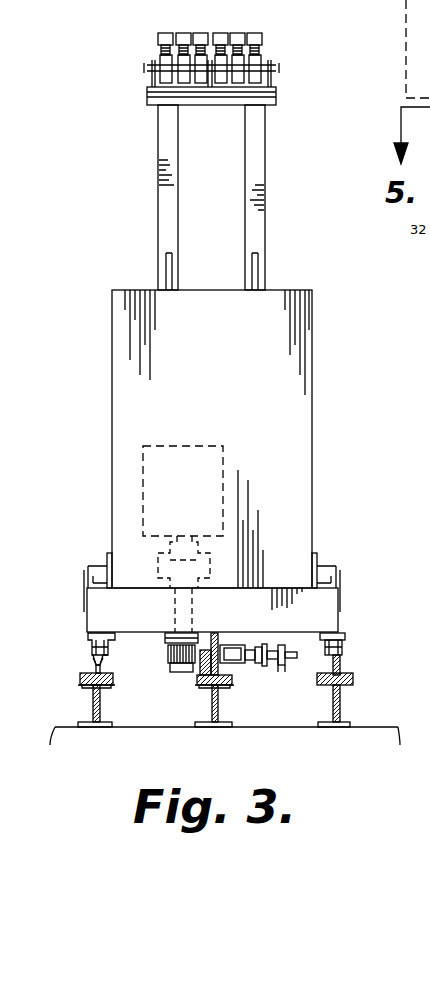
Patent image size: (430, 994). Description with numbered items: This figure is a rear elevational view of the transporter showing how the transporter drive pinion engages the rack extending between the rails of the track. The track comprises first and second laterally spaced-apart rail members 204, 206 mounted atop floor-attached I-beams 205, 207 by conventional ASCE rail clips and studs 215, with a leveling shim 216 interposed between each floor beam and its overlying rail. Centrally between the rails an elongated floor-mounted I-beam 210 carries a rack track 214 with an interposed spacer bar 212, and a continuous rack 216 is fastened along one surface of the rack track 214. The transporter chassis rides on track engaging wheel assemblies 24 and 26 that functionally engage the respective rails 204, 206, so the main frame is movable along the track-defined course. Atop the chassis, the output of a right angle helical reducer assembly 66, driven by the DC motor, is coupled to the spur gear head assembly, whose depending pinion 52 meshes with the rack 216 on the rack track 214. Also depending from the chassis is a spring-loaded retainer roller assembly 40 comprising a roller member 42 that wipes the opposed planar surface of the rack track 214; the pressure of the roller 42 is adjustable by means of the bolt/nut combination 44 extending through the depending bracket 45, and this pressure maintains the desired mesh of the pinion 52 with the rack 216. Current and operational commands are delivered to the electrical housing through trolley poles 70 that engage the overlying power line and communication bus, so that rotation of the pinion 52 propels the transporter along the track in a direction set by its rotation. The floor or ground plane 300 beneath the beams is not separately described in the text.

The trolley poles 70 is at (246, 177).
The right angle helical reducer assembly 66 is at (207, 494).
The track engaging wheel assembly 26 is at (97, 650).
The rail member 206 is at (100, 672).
The rail clips and studs 215 is at (80, 678).
The leveling shim 216 is at (80, 686).
The floor-attached I-beam 205 is at (100, 707).
The drive pinion 52 is at (168, 660).
The rack track 214 is at (213, 640).
The spacer bar 212 is at (233, 680).
The floor-mounted I-beam 210 is at (220, 707).
The roller member 42 is at (228, 650).
The spring-loaded retainer roller assembly 40 is at (265, 634).
The depending bracket 45 is at (300, 655).
The bolt/nut combination 44 is at (285, 665).
The track engaging wheel assembly 24 is at (344, 652).
The rail member 204 is at (341, 668).
The floor-attached I-beam 207 is at (342, 708).
The base plate 300 is at (272, 725).